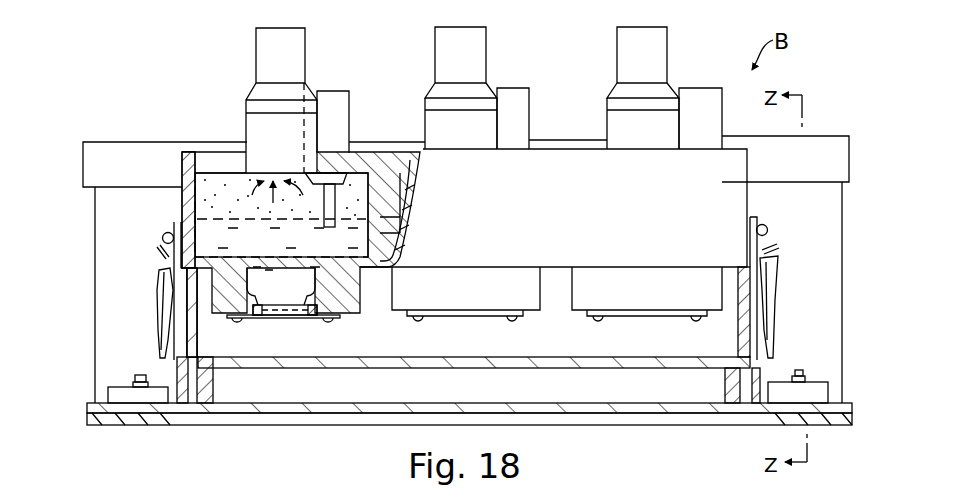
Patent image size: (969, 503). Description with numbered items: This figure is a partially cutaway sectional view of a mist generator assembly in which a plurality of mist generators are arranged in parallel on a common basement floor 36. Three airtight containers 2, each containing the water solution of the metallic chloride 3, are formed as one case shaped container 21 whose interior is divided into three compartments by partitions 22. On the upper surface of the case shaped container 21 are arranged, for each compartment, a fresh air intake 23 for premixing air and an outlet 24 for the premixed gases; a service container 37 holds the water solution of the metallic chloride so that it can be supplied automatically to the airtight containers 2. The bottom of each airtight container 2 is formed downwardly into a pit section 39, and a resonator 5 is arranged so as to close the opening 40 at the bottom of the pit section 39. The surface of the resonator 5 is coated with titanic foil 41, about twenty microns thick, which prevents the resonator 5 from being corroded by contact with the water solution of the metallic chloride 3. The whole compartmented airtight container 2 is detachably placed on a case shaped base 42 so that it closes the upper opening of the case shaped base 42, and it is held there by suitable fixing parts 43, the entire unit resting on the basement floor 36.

The airtight container 2 is at (190, 202).
The water solution of the metallic chloride 3 is at (212, 237).
The resonator 5 is at (285, 313).
The case shaped container 21 is at (735, 200).
The partition 22 is at (395, 228).
The fresh air intake 23 is at (293, 52).
The outlet 24 is at (262, 130).
The basement floor 36 is at (93, 403).
The service container 37 is at (342, 120).
The pit section 39 is at (318, 288).
The opening 40 is at (247, 288).
The titanic foil 41 is at (275, 304).
The case shaped base 42 is at (752, 317).
The fixing parts 43 is at (163, 307).